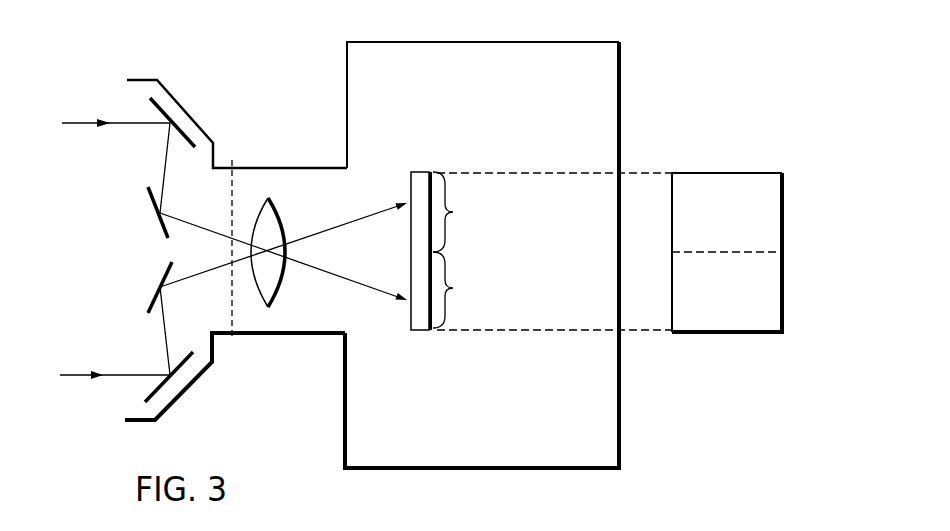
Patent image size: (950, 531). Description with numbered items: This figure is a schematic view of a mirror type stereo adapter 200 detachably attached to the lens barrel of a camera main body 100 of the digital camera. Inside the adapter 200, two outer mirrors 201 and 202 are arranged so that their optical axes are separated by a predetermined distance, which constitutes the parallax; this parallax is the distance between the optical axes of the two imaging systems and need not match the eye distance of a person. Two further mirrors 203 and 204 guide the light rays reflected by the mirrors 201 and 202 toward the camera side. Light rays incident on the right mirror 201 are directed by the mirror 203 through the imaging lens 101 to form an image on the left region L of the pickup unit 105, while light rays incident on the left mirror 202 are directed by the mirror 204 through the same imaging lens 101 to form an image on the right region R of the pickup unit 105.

The camera main body 100 is at (333, 67).
The imaging lens 101 is at (285, 223).
The pickup unit 105 is at (420, 170).
The mirror type stereo adapter 200 is at (174, 66).
The right mirror 201 is at (155, 393).
The left mirror 202 is at (155, 108).
The mirror 203 is at (158, 287).
The mirror 204 is at (155, 203).